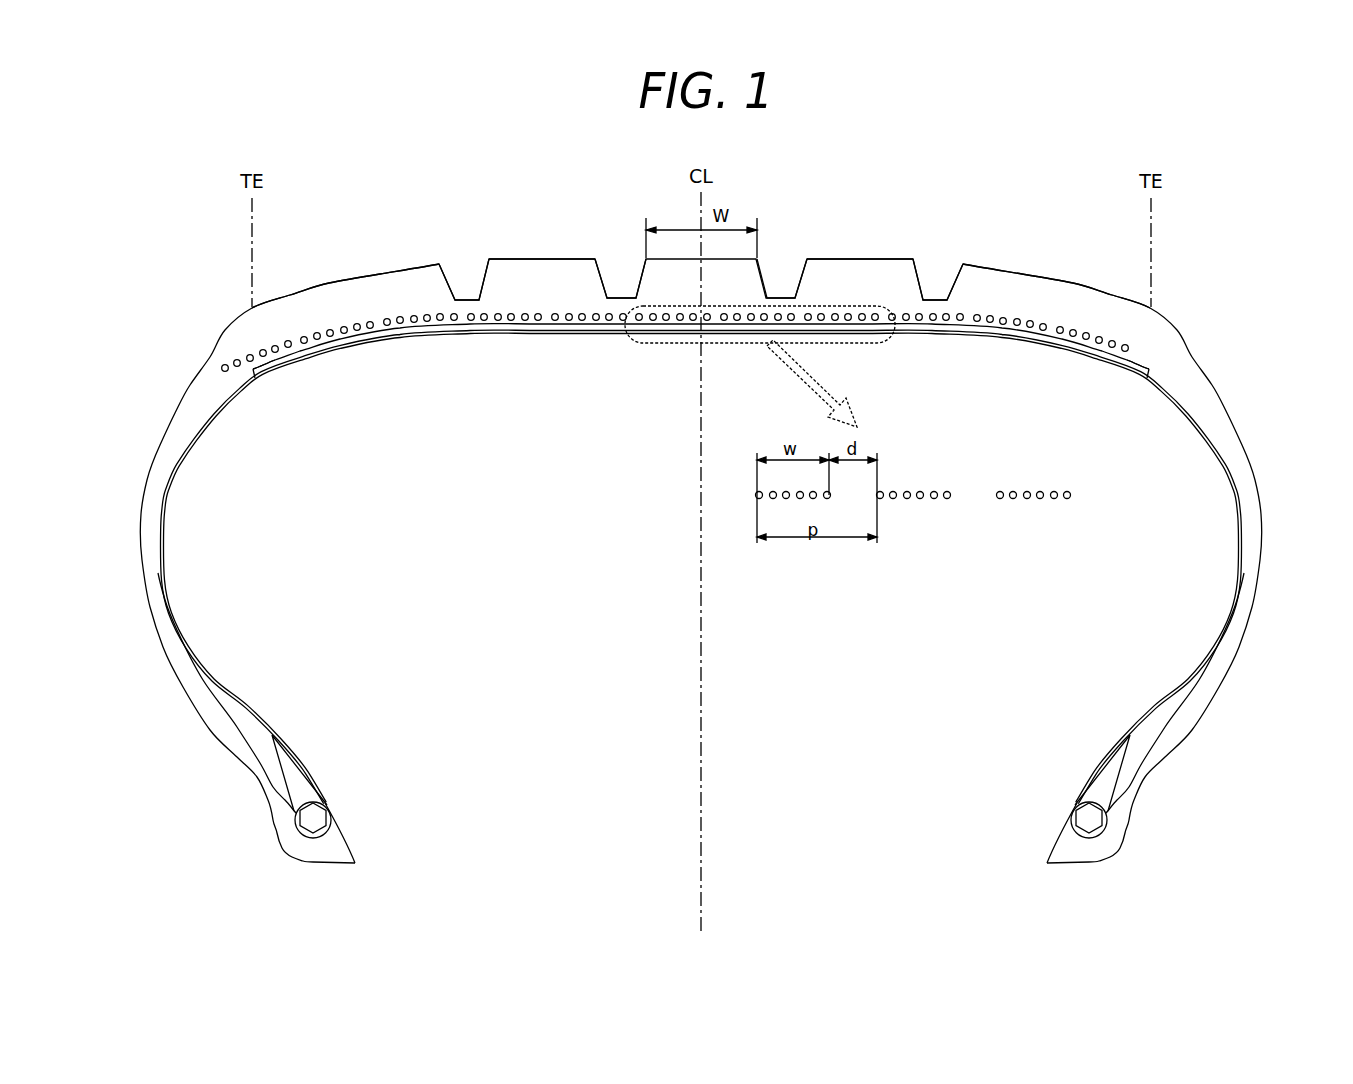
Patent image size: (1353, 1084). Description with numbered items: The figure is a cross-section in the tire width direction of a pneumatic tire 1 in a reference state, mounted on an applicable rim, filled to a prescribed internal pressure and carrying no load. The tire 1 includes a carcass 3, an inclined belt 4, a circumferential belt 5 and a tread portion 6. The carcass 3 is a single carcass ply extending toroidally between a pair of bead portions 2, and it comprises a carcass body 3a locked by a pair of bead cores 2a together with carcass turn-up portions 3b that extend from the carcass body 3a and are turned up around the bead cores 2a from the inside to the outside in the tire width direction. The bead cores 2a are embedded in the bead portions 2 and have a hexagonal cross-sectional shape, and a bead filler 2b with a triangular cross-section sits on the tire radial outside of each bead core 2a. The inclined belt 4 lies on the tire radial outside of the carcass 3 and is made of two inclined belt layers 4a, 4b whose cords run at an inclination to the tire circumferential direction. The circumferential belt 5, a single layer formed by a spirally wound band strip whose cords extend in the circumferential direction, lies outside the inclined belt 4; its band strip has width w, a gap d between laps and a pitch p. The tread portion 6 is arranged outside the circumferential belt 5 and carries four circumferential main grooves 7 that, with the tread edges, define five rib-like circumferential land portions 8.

The tire 1 is at (1197, 295).
The bead portions 2 is at (235, 788).
The bead cores 2a is at (313, 823).
The bead filler 2b is at (299, 788).
The carcass 3 is at (701, 597).
The carcass body 3a is at (165, 548).
The carcass turn-up portions 3b is at (170, 605).
The inclined belt 4 is at (713, 399).
The first belt ply 4a is at (1132, 375).
The second belt ply 4b is at (1097, 436).
The circumferential belt 5 is at (1080, 335).
The tread portion 6 is at (377, 312).
The circumferential main grooves 7 is at (465, 283).
The circumferential land portions 8 is at (543, 275).